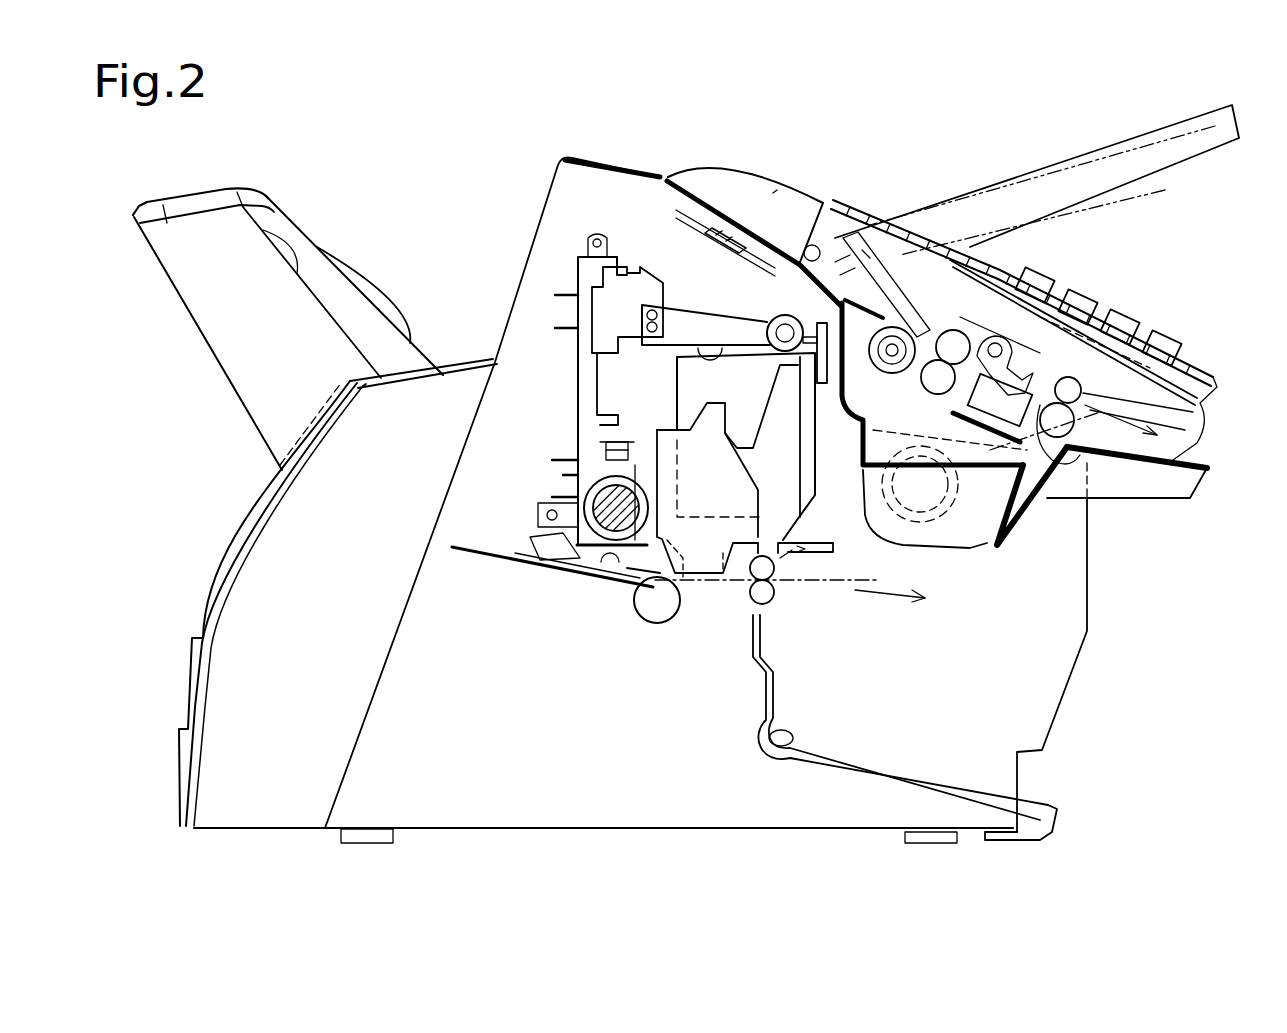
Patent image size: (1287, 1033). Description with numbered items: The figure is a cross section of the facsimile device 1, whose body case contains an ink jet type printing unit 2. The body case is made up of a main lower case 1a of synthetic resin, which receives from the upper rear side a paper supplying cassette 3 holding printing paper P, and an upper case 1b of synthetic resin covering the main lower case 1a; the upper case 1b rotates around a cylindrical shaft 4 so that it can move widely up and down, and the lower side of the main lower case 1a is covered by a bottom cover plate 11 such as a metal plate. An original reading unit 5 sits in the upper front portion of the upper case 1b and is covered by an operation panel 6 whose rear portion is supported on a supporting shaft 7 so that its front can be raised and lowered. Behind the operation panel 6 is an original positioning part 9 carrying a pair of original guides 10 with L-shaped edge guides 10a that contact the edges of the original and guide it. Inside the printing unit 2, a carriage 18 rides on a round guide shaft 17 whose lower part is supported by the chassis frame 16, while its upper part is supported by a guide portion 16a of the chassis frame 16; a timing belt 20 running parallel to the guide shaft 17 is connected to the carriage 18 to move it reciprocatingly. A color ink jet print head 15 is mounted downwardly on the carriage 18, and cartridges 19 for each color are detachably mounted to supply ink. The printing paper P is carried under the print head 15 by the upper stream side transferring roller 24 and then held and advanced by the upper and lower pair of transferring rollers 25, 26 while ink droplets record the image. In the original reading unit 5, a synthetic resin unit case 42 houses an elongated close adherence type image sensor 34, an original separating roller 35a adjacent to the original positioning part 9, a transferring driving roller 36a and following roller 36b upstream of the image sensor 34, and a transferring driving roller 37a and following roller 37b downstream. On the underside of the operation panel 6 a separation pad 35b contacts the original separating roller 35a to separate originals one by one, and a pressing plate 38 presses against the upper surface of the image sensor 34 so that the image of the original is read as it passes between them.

The facsimile device 1 is at (1100, 656).
The main lower case 1a is at (1027, 727).
The upper case 1b is at (1034, 518).
The printing unit 2 is at (828, 583).
The paper supplying cassette 3 is at (350, 262).
The cylindrical shaft 4 is at (927, 515).
The original reading unit 5 is at (1097, 318).
The operation panel 6 is at (1002, 265).
The supporting shaft 7 is at (823, 212).
The original positioning part 9 is at (660, 172).
The original guides 10 is at (740, 167).
The edge guides 10a is at (775, 192).
The bottom cover plate 11 is at (823, 834).
The print head 15 is at (710, 578).
The chassis frame 16 is at (578, 391).
The guide portion 16a is at (606, 258).
The guide shaft 17 is at (612, 505).
The carriage 18 is at (580, 362).
The cartridges 19 is at (790, 478).
The timing belt 20 is at (600, 442).
The upper stream side transferring roller 24 is at (650, 607).
The transferring roller 25 is at (768, 572).
The transferring roller 26 is at (766, 598).
The image sensor 34 is at (1038, 516).
The original separating roller 35a is at (788, 320).
The separation pad 35b is at (903, 295).
The transferring driving roller 36a is at (937, 380).
The following roller 36b is at (955, 345).
The transferring driving roller 37a is at (1075, 430).
The following roller 37b is at (1082, 393).
The pressing plate 38 is at (1058, 362).
The unit case 42 is at (993, 478).
The printing paper P is at (868, 612).